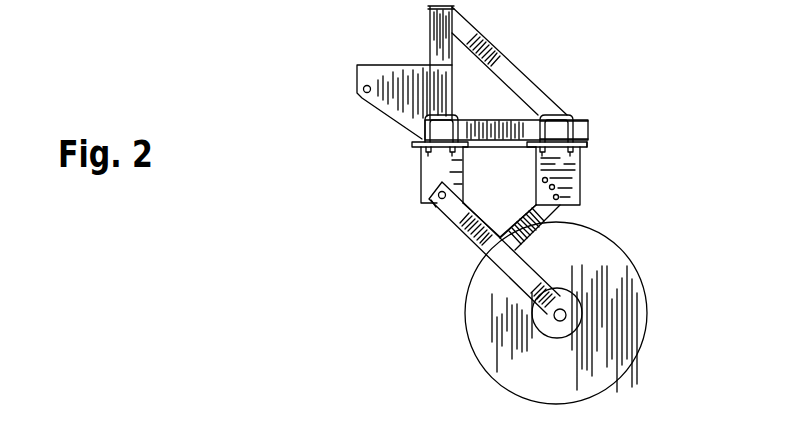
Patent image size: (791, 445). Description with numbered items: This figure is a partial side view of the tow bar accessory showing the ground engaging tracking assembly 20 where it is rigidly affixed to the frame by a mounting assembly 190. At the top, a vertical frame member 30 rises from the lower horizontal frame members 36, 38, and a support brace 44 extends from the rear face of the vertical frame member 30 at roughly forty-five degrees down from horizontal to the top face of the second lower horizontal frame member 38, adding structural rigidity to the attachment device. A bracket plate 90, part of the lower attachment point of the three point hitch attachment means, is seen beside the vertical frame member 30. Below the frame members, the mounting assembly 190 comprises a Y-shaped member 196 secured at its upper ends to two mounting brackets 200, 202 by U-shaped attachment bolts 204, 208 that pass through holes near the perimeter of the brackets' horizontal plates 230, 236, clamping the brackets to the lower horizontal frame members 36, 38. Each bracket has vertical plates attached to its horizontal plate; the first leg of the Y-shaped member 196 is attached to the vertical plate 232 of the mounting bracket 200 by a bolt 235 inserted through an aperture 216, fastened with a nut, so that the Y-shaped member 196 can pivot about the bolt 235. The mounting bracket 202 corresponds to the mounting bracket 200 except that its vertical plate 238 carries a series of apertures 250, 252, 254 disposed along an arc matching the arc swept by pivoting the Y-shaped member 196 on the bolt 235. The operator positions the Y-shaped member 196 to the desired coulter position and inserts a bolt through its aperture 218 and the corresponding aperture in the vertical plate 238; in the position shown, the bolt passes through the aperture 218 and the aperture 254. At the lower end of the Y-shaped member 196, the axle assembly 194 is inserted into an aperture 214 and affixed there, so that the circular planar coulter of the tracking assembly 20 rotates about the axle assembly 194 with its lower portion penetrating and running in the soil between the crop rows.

The ground engaging tracking assembly 20 is at (526, 313).
The vertical frame member 30 is at (430, 27).
The first lower horizontal frame member 36 is at (425, 126).
The second lower horizontal frame member 38 is at (560, 132).
The support brace 44 is at (468, 32).
The bracket plate 90 is at (388, 72).
The mounting assembly 190 is at (462, 91).
The axle assembly 194 is at (580, 303).
The Y-shaped member 196 is at (480, 252).
The mounting bracket 200 is at (491, 242).
The mounting bracket 202 is at (606, 80).
The U-shaped attachment bolt 204 is at (440, 127).
The U-shaped attachment bolt 208 is at (558, 128).
The aperture 214 is at (568, 322).
The aperture 216 is at (438, 196).
The aperture 218 is at (536, 196).
The horizontal plate 230 is at (413, 143).
The vertical plate 232 is at (430, 172).
The bolt 235 is at (443, 213).
The horizontal plate 236 is at (587, 143).
The vertical plate 238 is at (611, 193).
The aperture 250 is at (582, 172).
The aperture 252 is at (582, 185).
The aperture 254 is at (586, 198).